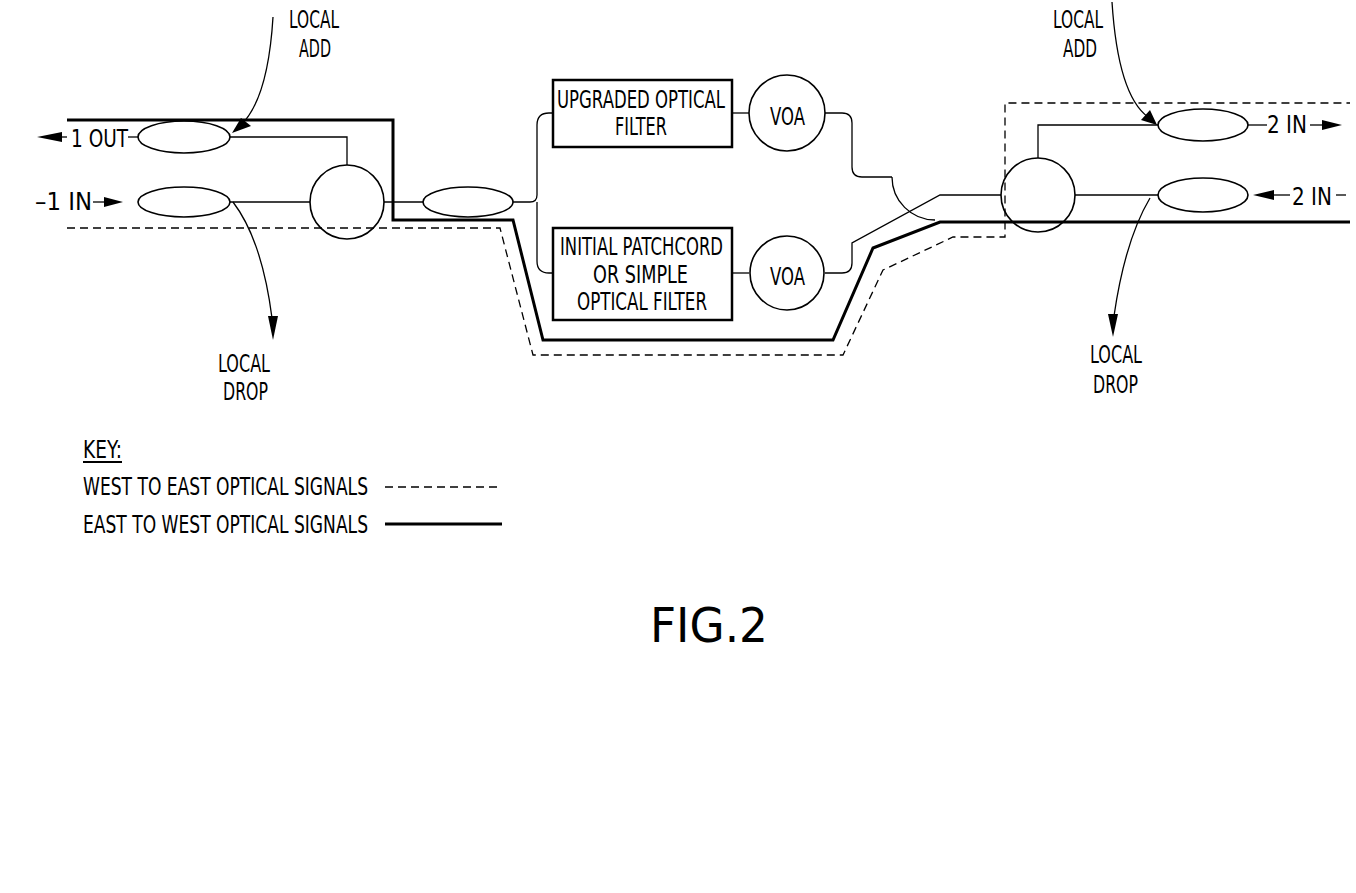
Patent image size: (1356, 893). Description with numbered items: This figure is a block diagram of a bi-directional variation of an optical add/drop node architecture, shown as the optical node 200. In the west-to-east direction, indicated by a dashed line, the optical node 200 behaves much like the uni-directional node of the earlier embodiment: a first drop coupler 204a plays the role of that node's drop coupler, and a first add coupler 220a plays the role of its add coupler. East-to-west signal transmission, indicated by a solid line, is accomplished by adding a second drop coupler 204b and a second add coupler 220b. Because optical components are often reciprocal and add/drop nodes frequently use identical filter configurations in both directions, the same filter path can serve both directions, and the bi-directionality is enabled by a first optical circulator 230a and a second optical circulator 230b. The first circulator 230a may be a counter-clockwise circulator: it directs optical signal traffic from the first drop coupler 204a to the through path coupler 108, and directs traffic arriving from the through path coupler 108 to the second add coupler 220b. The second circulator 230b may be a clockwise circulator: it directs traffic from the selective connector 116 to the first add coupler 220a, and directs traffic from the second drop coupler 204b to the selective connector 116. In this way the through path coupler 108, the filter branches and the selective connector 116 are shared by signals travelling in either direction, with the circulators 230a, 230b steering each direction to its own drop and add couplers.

The optical node 200 is at (724, 38).
The second add coupler 220b is at (163, 120).
The first drop coupler 204a is at (160, 217).
The first optical circulator 230a is at (362, 172).
The through path coupler 108 is at (463, 185).
The selective connector 116 is at (908, 220).
The second optical circulator 230b is at (1018, 170).
The first add coupler 220a is at (1198, 112).
The second drop coupler 204b is at (1212, 210).